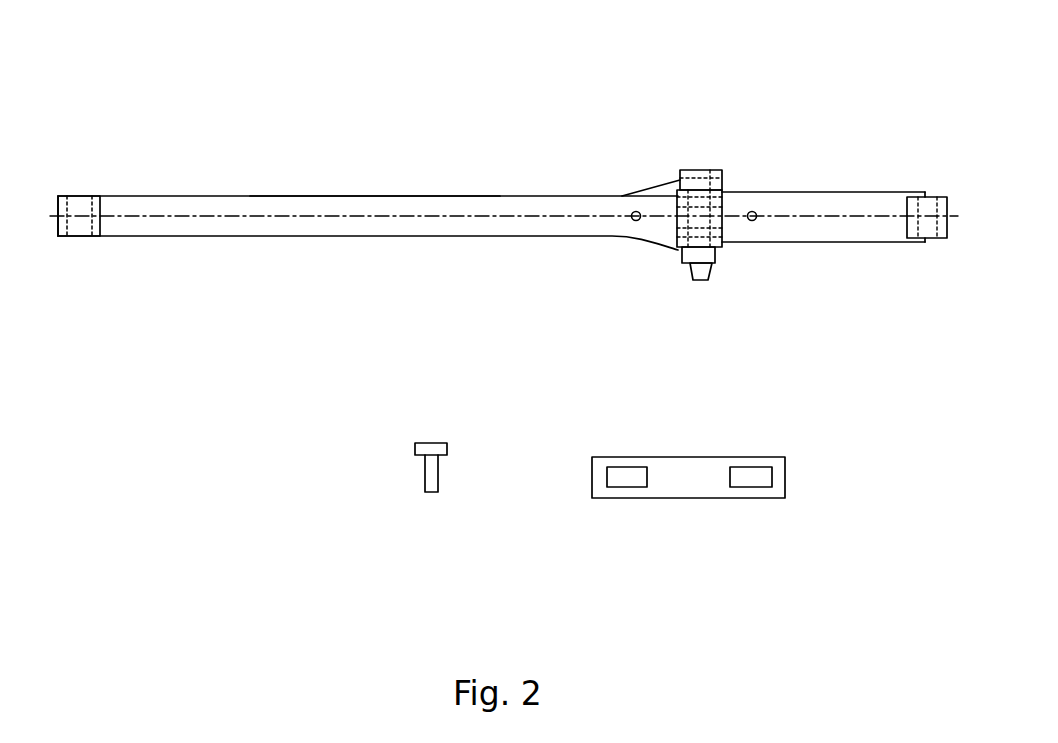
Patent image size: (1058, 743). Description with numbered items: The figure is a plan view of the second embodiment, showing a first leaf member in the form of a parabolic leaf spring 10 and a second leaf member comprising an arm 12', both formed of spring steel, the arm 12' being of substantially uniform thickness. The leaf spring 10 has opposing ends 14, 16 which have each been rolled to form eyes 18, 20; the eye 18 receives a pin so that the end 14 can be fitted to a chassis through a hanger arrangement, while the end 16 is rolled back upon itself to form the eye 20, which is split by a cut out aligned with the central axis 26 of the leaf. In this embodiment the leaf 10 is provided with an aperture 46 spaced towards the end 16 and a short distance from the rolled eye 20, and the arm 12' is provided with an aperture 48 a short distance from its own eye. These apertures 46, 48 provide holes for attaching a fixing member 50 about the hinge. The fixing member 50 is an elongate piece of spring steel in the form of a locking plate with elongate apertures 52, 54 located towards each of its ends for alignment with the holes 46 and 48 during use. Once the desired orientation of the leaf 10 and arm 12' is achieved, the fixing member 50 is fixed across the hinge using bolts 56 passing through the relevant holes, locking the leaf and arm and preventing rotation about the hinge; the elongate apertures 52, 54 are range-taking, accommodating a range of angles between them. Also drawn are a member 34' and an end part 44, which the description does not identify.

The parabolic leaf spring 10 is at (292, 228).
The arm 12' is at (823, 266).
The end 14 is at (58, 197).
The end 16 is at (708, 130).
The eye 18 is at (83, 197).
The eye 20 is at (712, 172).
The central axis 26 is at (370, 214).
The locking member 34' is at (679, 123).
The end cap of second tube 44 is at (928, 227).
The aperture 46 is at (632, 213).
The aperture 48 is at (758, 210).
The fixing member 50 is at (675, 485).
The elongate aperture 52 is at (760, 477).
The elongate aperture 54 is at (620, 470).
The bolt 56 is at (428, 488).